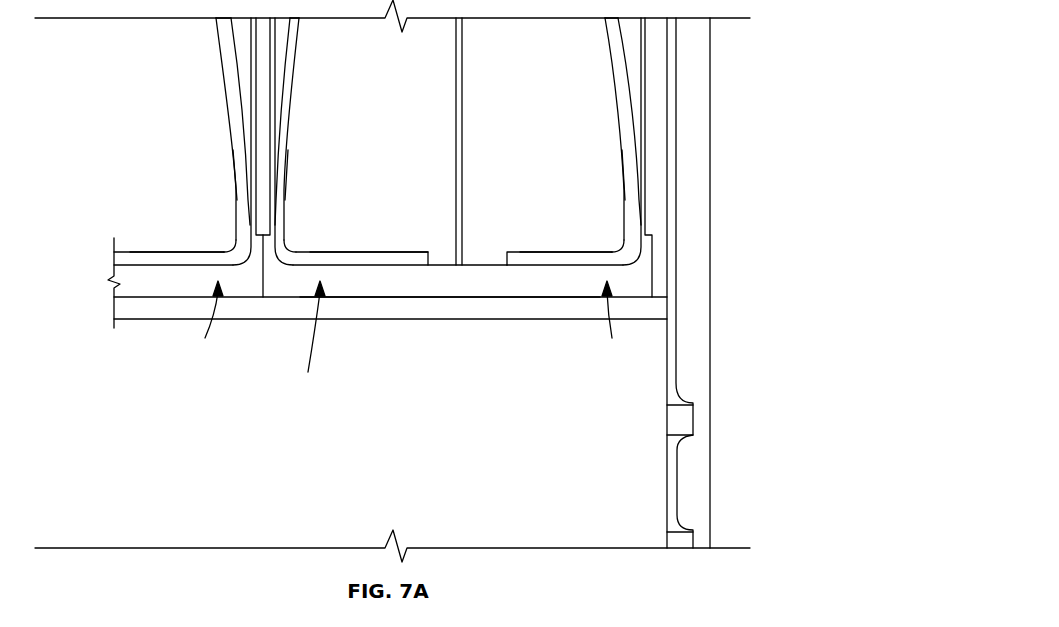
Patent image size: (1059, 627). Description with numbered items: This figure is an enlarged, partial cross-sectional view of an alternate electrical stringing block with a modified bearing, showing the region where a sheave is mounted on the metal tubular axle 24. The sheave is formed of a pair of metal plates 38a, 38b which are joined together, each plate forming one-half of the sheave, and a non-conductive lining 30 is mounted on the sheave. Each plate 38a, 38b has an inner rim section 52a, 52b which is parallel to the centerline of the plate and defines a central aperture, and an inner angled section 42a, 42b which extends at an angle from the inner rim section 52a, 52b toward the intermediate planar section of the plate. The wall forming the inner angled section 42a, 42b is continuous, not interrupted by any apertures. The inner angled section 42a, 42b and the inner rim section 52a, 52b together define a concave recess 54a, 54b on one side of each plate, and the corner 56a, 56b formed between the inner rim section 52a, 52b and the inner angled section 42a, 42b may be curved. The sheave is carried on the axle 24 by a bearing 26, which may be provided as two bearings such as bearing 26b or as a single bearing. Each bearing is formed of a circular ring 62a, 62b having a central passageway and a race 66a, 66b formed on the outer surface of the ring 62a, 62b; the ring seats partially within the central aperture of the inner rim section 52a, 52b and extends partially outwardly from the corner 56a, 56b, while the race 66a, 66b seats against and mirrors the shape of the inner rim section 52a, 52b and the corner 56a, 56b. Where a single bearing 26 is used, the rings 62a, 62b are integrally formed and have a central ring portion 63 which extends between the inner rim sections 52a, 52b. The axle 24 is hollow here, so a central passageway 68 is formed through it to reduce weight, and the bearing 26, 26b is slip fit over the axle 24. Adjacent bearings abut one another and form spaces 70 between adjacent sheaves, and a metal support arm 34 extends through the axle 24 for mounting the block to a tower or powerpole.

The tubular axle 24 is at (505, 300).
The bearing 26 is at (253, 338).
The bearing 26b is at (617, 321).
The non-conductive lining 30 is at (240, 60).
The support arm 34 is at (688, 316).
The metal plate 38a is at (296, 186).
The metal plate 38b is at (212, 83).
The inner angled section 42a is at (290, 150).
The inner angled section 42b is at (236, 150).
The inner rim section 52a is at (407, 252).
The inner rim section 52b is at (148, 252).
The concave recess 54a is at (391, 141).
The concave recess 54b is at (494, 141).
The corner 56a is at (300, 252).
The corner 56b is at (234, 247).
The circular ring 62a is at (345, 288).
The circular ring 62b is at (238, 290).
The central ring portion 63 is at (465, 288).
The race 66a is at (348, 252).
The race 66b is at (184, 252).
The central passageway 68 is at (370, 427).
The space 70 is at (265, 75).